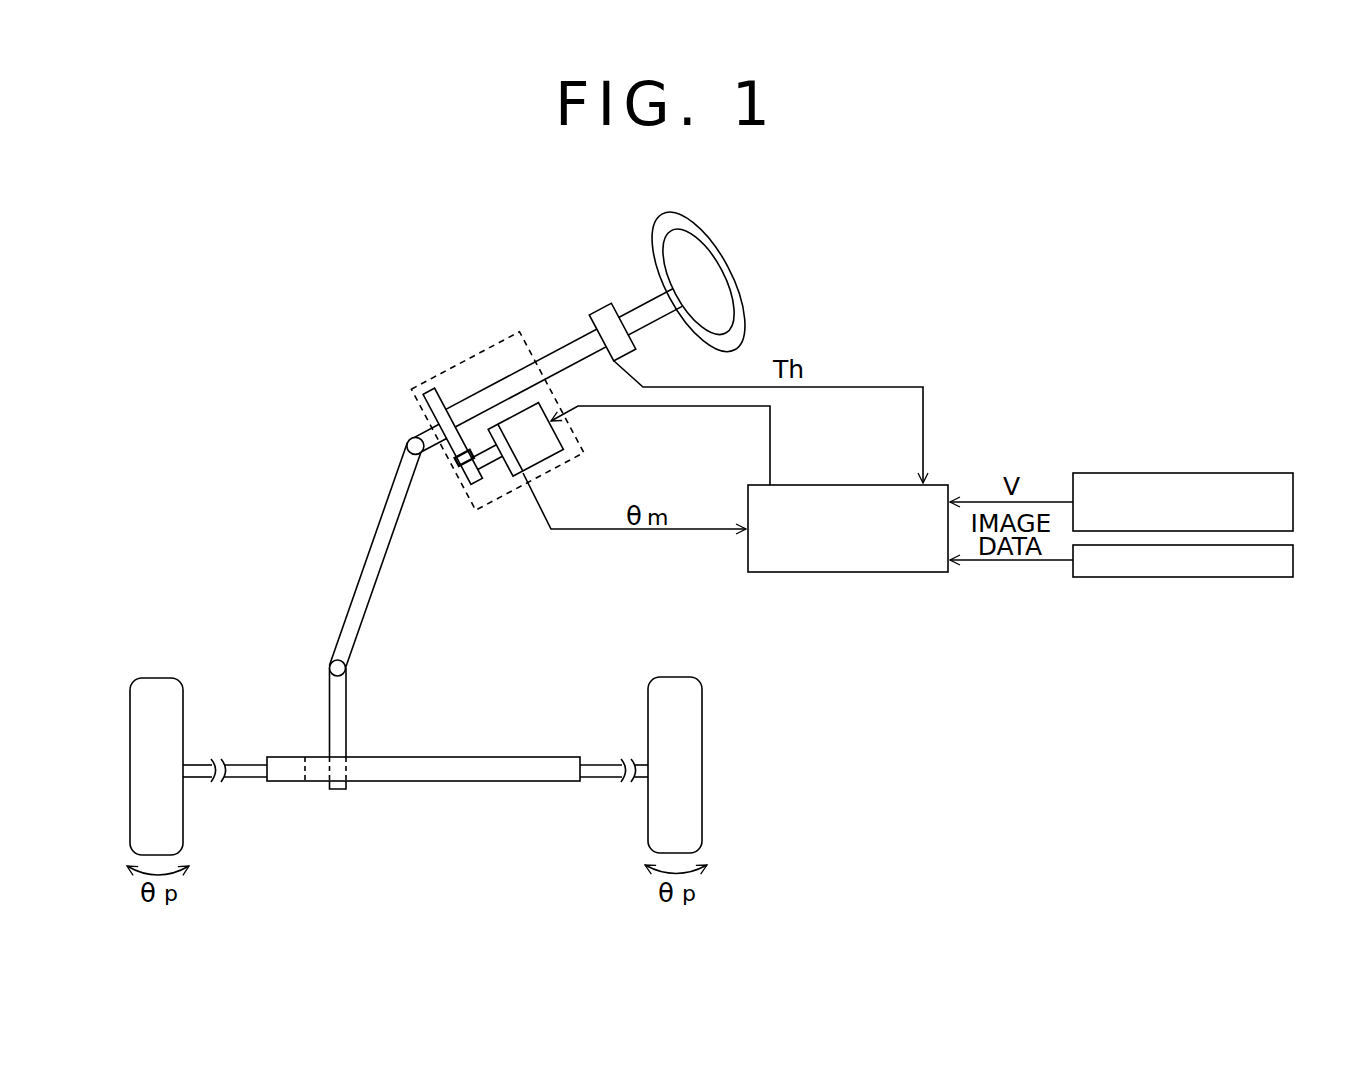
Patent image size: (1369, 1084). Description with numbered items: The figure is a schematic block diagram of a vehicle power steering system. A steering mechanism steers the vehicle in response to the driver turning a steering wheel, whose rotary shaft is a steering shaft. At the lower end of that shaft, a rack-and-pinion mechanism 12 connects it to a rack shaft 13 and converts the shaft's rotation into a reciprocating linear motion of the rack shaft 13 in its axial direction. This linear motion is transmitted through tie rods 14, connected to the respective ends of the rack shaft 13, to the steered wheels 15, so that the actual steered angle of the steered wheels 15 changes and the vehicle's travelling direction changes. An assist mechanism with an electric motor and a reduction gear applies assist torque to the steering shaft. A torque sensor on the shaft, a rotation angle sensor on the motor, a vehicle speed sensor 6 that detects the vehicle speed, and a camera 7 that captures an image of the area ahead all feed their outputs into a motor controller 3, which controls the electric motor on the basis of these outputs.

The motor controller 3 is at (900, 573).
The vehicle speed sensor 6 is at (1294, 502).
The camera 7 is at (1294, 561).
The rack-and-pinion mechanism 12 is at (373, 781).
The rack shaft 13 is at (443, 757).
The tie rod 14 is at (244, 778).
The steered wheel 15 is at (130, 767).